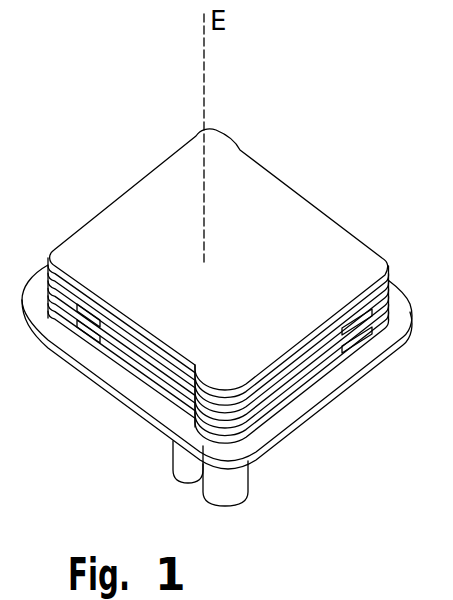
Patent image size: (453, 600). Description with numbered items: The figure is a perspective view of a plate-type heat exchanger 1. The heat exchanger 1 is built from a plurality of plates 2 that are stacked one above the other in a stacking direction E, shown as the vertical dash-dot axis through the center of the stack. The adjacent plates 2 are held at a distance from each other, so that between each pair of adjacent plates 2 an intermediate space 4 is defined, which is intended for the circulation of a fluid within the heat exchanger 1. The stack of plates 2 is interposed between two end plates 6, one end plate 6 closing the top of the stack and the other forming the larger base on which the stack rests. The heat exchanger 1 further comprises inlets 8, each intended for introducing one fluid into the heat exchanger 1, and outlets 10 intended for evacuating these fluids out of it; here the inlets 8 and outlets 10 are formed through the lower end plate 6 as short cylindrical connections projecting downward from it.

The heat exchanger 1 is at (312, 117).
The plates 2 is at (300, 378).
The intermediate space 4 is at (397, 307).
The end plates 6 is at (322, 218).
The inlets 8 is at (187, 466).
The outlets 10 is at (222, 478).